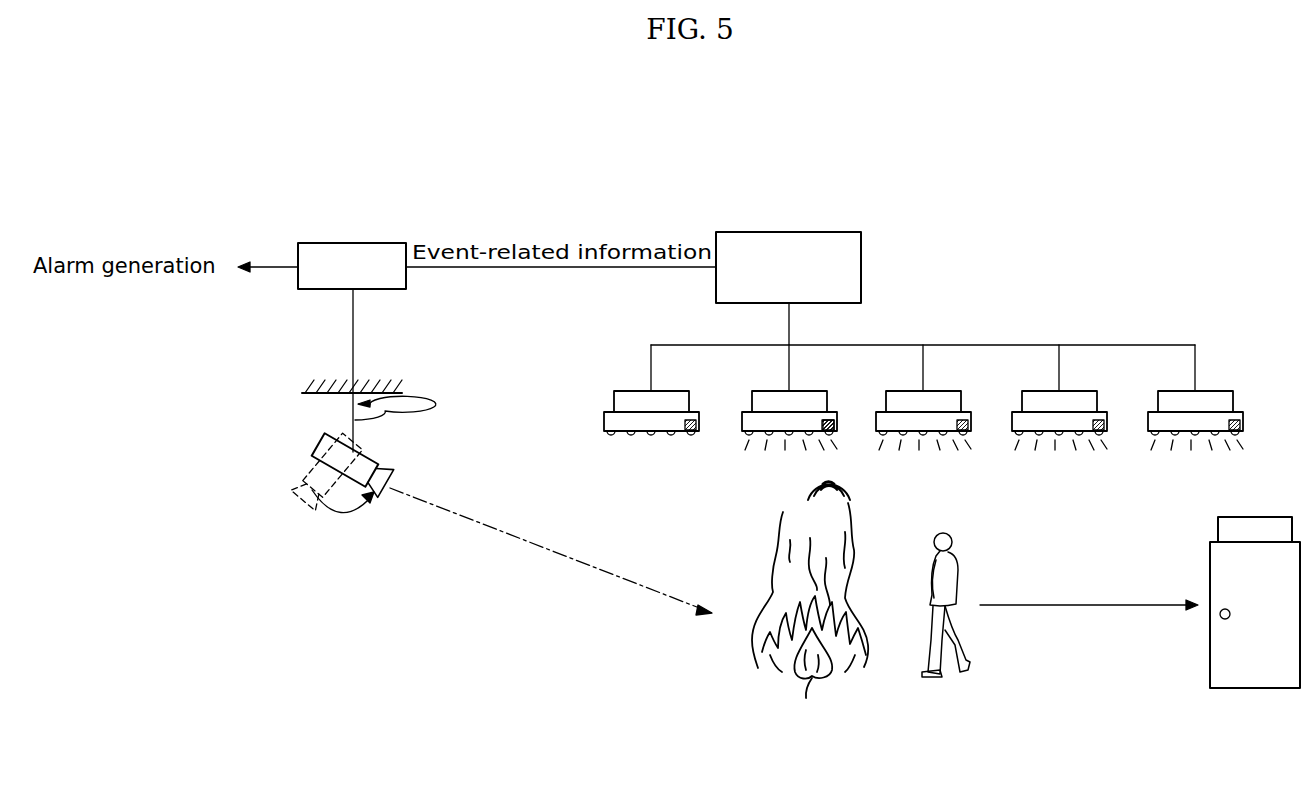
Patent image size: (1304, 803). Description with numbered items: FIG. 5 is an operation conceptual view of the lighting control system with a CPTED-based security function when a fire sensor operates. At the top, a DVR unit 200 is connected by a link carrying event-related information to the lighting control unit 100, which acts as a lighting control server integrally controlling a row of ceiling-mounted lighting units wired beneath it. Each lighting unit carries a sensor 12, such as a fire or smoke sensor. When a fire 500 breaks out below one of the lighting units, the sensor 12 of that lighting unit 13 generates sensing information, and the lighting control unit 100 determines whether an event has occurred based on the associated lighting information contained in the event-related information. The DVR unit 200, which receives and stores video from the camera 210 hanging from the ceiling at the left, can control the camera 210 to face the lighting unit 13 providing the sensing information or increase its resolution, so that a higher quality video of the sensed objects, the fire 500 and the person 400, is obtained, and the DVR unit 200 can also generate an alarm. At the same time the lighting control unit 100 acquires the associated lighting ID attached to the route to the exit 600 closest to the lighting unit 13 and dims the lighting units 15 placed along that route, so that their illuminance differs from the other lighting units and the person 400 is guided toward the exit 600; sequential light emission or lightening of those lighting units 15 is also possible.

The lighting control unit 100 is at (789, 232).
The DVR unit 200 is at (385, 243).
The camera 210 is at (372, 450).
The sensor 12 is at (835, 428).
The lighting unit 13 is at (815, 397).
The lighting unit 15 is at (1089, 397).
The object 400 is at (935, 680).
The object 500 is at (800, 683).
The exit 600 is at (1247, 670).